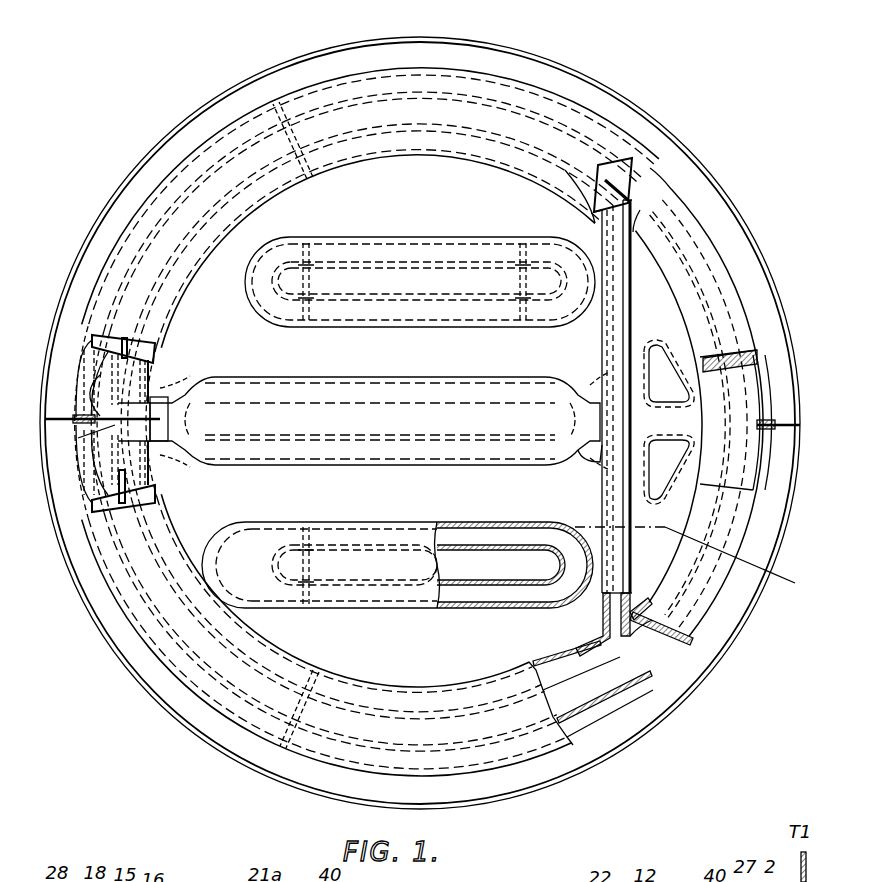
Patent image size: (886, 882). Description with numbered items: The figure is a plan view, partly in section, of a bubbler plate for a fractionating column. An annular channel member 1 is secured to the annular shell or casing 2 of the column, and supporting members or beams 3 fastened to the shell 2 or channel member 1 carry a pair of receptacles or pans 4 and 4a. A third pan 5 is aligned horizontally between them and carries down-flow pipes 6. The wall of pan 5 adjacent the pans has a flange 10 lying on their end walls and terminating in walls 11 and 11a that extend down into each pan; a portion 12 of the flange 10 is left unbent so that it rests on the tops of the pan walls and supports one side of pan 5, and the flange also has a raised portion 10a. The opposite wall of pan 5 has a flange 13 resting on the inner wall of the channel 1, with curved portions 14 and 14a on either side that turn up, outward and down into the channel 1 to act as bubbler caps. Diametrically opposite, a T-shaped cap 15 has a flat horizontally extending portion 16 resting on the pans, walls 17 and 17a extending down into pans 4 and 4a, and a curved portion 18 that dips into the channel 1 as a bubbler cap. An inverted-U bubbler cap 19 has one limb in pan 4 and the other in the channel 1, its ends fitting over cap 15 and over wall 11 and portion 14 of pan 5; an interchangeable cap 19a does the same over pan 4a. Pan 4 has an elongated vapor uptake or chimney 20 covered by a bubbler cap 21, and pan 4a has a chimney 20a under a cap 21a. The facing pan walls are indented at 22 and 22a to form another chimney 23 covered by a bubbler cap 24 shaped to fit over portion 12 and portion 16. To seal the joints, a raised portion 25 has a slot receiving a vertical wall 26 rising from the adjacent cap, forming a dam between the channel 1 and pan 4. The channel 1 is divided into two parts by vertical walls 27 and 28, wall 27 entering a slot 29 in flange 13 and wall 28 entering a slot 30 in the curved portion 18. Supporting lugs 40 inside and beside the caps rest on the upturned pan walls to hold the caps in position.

The annular channel member 1 is at (683, 680).
The annular shell or casing 2 is at (48, 419).
The supporting members or beams 3 is at (430, 58).
The receptacle or pan 4 is at (576, 689).
The receptacle or pan 4a is at (612, 222).
The third pan 5 is at (636, 624).
The down-flow pipes 6 is at (666, 392).
The flange 10 is at (615, 557).
The raised portion of flange 10a is at (637, 222).
The wall 11 is at (603, 604).
The wall 11a is at (603, 330).
The portion of flange 12 is at (600, 450).
The flange 13 is at (746, 381).
The curved portion 14 is at (724, 603).
The curved portion 14a is at (712, 262).
The T-shaped cap 15 is at (90, 478).
The flat horizontally extending portion 16 is at (158, 400).
The wall 17 is at (147, 461).
The wall 17a is at (150, 370).
The curved portion 18 is at (88, 360).
The bubbler cap 19 is at (582, 737).
The bubbler cap 19a is at (568, 121).
The vapor uptake or chimney 20 is at (475, 556).
The vapor uptake or chimney 20a is at (390, 262).
The bubbler cap 21 is at (470, 609).
The bubbler cap 21a is at (455, 258).
The indentation 22 is at (188, 457).
The indentation 22a is at (192, 386).
The vapor uptake or chimney 23 is at (304, 405).
The bubbler cap 24 is at (383, 392).
The raised portion 25 is at (150, 332).
The vertical wall 26 is at (80, 438).
The vertical wall 27 is at (768, 428).
The vertical wall 28 is at (62, 416).
The slot 29 is at (754, 418).
The slot 30 is at (88, 396).
The supporting lugs 40 is at (300, 180).